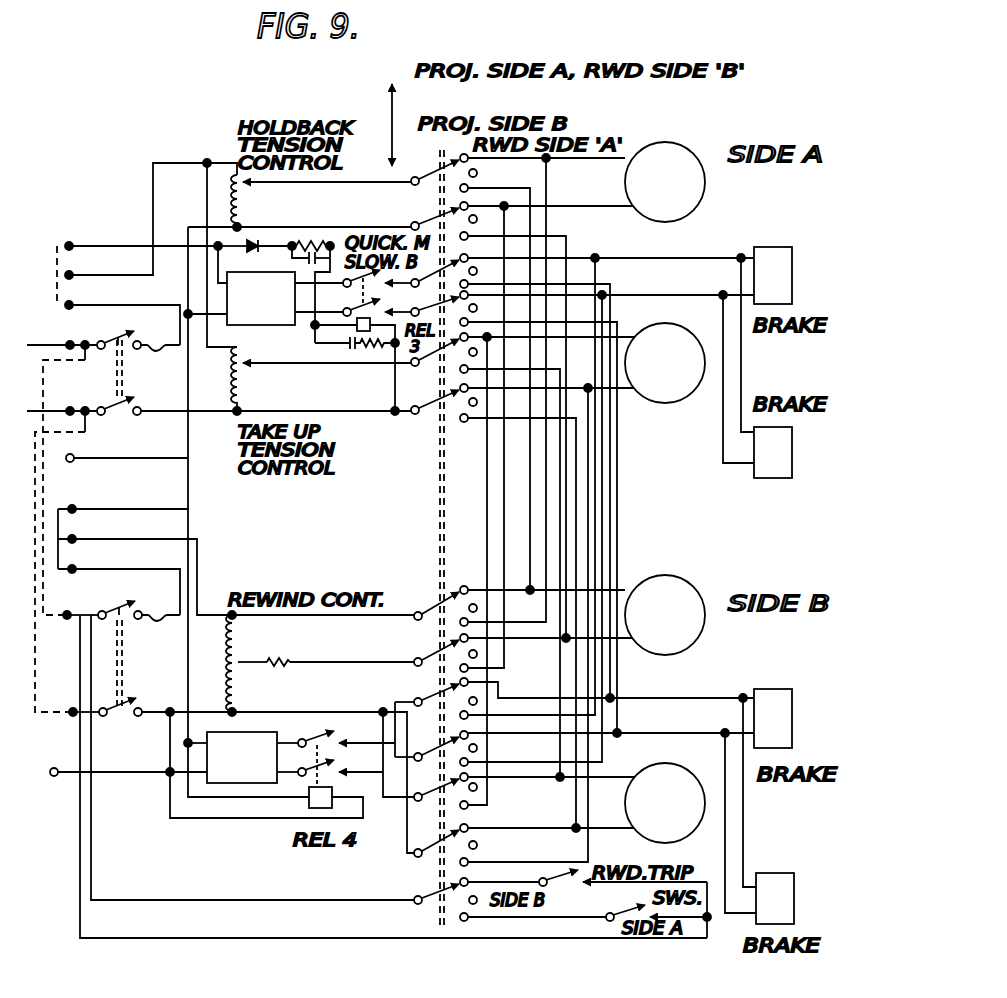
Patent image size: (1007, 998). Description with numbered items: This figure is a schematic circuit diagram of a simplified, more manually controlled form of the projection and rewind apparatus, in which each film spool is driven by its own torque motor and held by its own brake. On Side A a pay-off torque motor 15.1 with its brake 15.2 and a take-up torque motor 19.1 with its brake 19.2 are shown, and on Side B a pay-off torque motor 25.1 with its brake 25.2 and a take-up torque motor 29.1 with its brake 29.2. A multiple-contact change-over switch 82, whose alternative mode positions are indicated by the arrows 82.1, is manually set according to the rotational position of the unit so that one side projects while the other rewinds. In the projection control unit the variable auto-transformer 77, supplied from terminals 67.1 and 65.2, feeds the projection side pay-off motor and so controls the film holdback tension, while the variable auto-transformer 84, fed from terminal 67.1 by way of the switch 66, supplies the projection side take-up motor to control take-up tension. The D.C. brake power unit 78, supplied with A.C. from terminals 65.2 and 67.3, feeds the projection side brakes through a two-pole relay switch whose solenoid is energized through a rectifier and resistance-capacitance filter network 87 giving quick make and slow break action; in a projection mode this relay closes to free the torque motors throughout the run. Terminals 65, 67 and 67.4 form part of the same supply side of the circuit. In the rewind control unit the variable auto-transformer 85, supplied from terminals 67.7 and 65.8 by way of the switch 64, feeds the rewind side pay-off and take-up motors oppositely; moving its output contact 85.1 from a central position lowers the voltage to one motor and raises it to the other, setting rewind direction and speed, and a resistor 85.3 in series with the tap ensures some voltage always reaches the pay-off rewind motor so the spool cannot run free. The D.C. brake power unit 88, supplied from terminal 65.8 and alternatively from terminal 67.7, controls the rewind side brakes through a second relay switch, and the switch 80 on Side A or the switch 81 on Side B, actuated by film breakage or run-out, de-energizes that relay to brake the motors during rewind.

The pay-off torque motor 15.1 is at (685, 143).
The brake 15.2 is at (770, 247).
The take-up torque motor 19.1 is at (674, 404).
The brake 19.2 is at (777, 478).
The pay-off torque motor 25.1 is at (680, 578).
The brake 25.2 is at (772, 673).
The take-up torque motor 29.1 is at (648, 772).
The brake 29.2 is at (775, 872).
The switch 64 is at (122, 672).
The take-up control switch 65 is at (68, 409).
The terminal 65.2 is at (73, 456).
The terminal 65.8 is at (73, 715).
The switch 66 is at (126, 372).
The holdback control switch 67 is at (67, 344).
The terminal 67.1 is at (69, 275).
The terminal 67.3 is at (69, 246).
The switch contact 67.4 is at (69, 305).
The terminal 67.7 is at (67, 612).
The variable auto-transformer 77 is at (244, 198).
The D.C. brake power unit 78 is at (268, 326).
The switch 80 is at (633, 912).
The switch 81 is at (562, 878).
The multiple-contact change-over switch 82 is at (440, 158).
The arrows 82.1 is at (392, 115).
The variable auto-transformer 84 is at (244, 386).
The variable auto-transformer 85 is at (241, 640).
The output contact 85.1 is at (245, 665).
The resistor 85.3 is at (283, 661).
The rectifier and resistance-capacitance filter network 87 is at (313, 329).
The D.C. brake power unit 88 is at (279, 736).